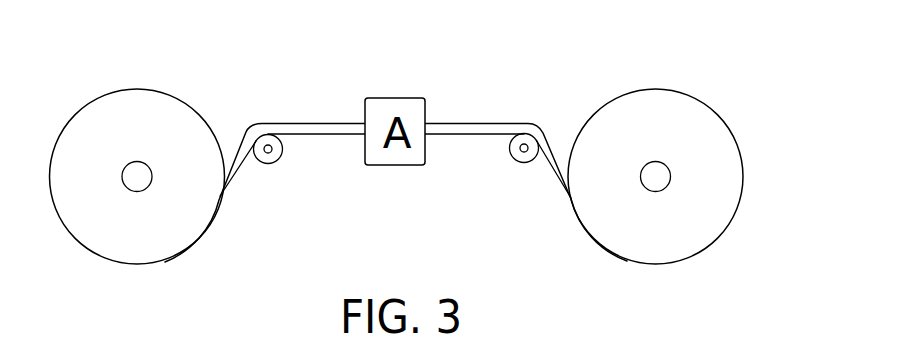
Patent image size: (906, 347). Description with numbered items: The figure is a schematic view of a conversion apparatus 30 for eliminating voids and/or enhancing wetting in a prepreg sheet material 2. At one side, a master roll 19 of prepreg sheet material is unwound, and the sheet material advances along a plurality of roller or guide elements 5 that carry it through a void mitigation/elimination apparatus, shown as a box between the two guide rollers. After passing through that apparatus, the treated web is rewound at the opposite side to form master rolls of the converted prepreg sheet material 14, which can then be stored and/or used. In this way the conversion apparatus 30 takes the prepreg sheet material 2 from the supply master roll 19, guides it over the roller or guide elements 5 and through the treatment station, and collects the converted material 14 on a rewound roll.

The prepreg sheet material 2 is at (296, 123).
The roller or guide elements 5 is at (270, 163).
The master roll of converted prepreg sheet material 14 is at (613, 238).
The master roll 19 is at (173, 241).
The conversion apparatus 30 is at (518, 98).